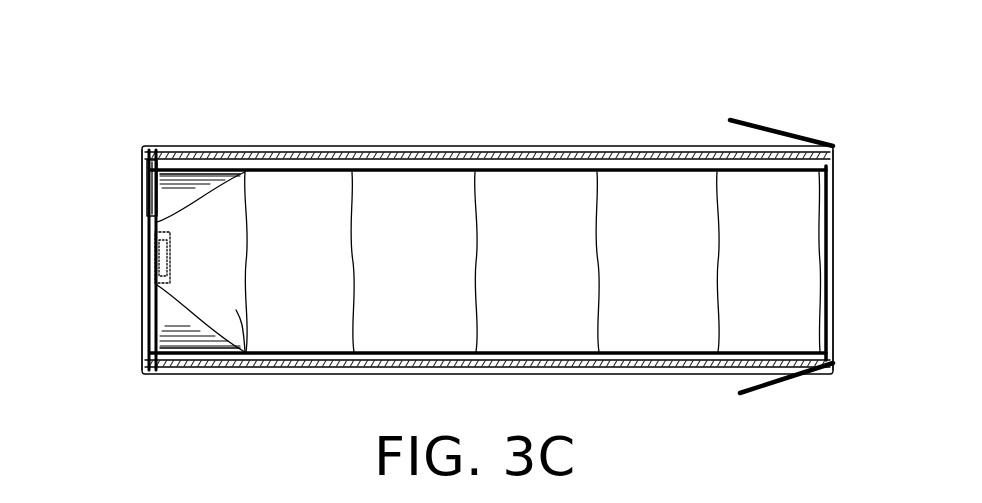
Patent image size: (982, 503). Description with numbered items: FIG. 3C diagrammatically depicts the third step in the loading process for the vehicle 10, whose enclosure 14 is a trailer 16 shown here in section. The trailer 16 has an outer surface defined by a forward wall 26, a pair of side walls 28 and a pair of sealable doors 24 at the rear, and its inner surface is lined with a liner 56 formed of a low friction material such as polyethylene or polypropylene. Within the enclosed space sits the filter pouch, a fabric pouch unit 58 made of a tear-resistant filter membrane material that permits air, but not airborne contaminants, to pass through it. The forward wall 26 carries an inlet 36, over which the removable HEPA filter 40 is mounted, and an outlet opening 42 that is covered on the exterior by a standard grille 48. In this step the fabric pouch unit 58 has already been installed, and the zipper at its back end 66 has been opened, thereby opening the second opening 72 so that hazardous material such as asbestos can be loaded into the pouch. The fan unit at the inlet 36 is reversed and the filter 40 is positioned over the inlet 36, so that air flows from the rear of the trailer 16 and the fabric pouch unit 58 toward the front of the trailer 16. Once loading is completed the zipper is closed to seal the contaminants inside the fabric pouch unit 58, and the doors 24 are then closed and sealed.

The vehicle 10 is at (528, 72).
The enclosure 14 is at (572, 204).
The trailer 16 is at (533, 157).
The sealable doors 24 is at (760, 121).
The forward wall 26 is at (144, 311).
The side walls 28 is at (435, 154).
The inlet 36 is at (144, 265).
The removable HEPA filter 40 is at (146, 255).
The outlet opening 42 is at (142, 193).
The grille 48 is at (143, 181).
The liner 56 is at (300, 165).
The fabric pouch unit 58 is at (240, 306).
The back end 66 is at (831, 246).
The second opening 72 is at (826, 288).